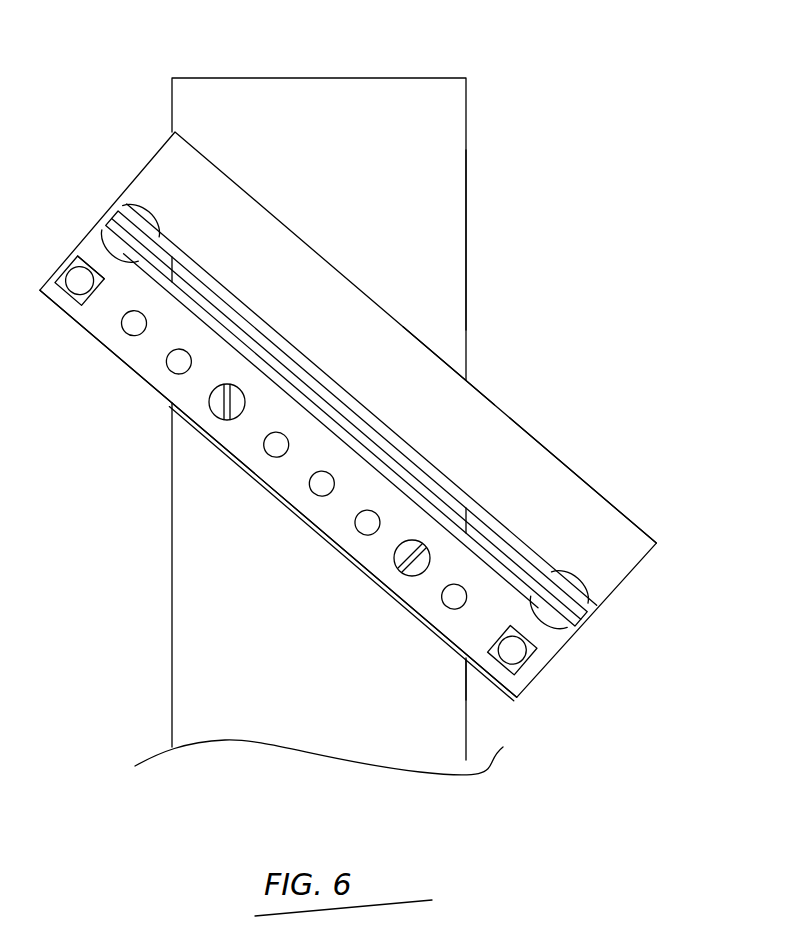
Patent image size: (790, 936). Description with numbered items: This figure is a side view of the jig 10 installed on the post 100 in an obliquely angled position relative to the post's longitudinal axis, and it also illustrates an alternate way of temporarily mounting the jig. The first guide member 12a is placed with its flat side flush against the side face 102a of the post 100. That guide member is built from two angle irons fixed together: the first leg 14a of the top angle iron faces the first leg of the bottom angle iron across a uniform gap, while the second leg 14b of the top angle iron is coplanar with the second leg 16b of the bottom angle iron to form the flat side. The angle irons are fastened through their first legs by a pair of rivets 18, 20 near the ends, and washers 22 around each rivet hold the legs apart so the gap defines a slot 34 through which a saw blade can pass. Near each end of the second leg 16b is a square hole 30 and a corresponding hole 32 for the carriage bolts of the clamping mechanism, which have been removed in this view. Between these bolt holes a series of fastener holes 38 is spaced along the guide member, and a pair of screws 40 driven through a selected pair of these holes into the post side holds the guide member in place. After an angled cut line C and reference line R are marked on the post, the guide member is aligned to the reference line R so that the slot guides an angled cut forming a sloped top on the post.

The post 100 is at (404, 63).
The side face of the post 102a is at (440, 243).
The jig 10 is at (540, 385).
The first guide member 12a is at (648, 508).
The first leg of the top angle iron 14a is at (498, 525).
The second leg of the top angle iron 14b is at (526, 440).
The second leg of the bottom angle iron 16b is at (342, 523).
The rivet 18 is at (144, 210).
The rivet 20 is at (569, 580).
The washer 22 is at (104, 217).
The square hole 30 is at (85, 300).
The corresponding hole 32 is at (77, 261).
The slot 34 is at (566, 638).
The fastener holes 38 is at (270, 457).
The screws 40 is at (214, 405).
The cut line C is at (380, 443).
The reference line R is at (460, 665).